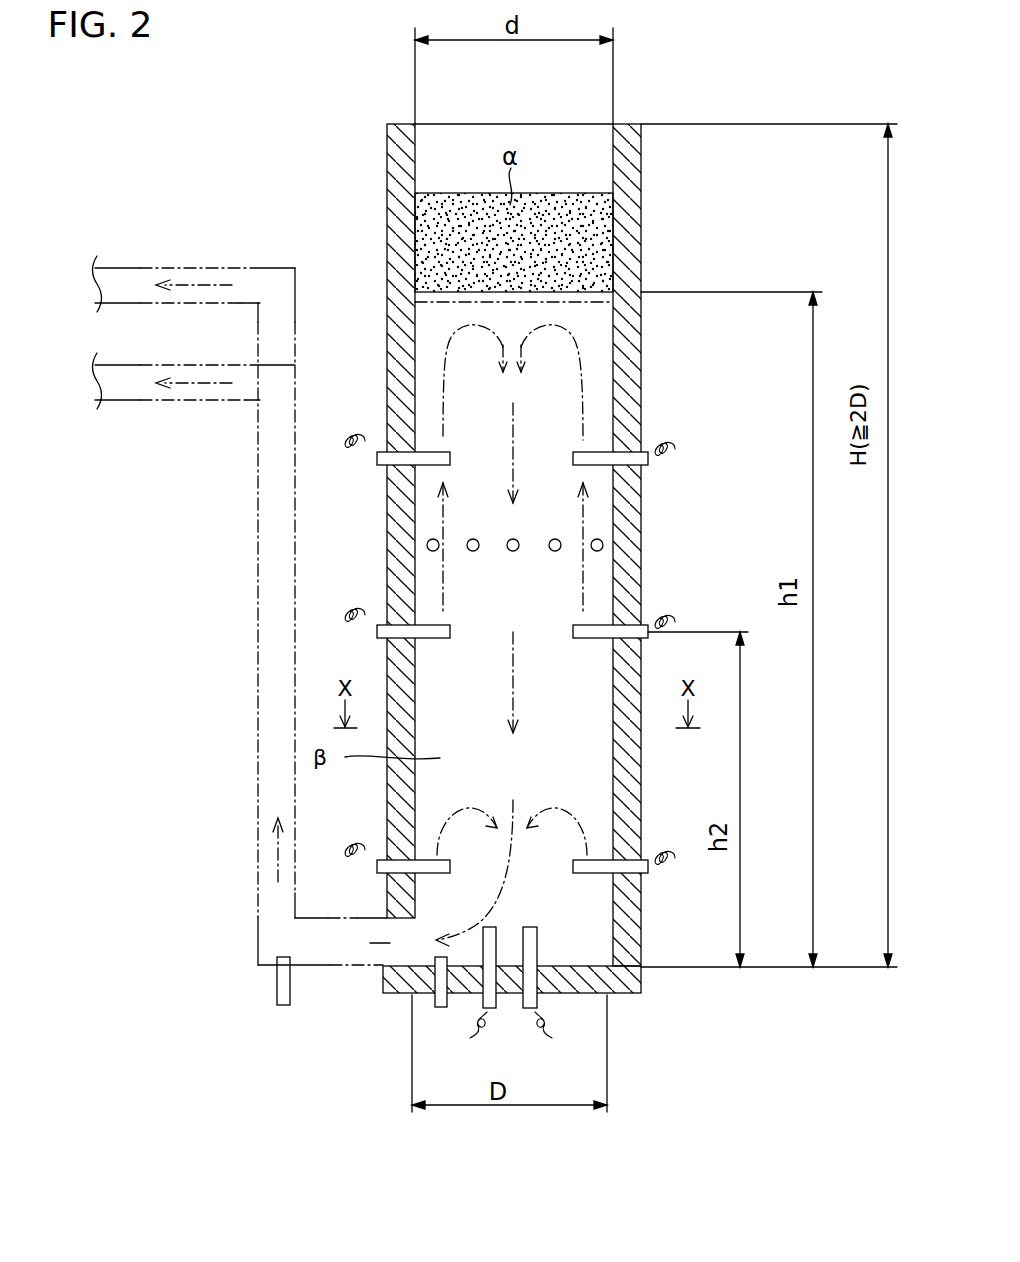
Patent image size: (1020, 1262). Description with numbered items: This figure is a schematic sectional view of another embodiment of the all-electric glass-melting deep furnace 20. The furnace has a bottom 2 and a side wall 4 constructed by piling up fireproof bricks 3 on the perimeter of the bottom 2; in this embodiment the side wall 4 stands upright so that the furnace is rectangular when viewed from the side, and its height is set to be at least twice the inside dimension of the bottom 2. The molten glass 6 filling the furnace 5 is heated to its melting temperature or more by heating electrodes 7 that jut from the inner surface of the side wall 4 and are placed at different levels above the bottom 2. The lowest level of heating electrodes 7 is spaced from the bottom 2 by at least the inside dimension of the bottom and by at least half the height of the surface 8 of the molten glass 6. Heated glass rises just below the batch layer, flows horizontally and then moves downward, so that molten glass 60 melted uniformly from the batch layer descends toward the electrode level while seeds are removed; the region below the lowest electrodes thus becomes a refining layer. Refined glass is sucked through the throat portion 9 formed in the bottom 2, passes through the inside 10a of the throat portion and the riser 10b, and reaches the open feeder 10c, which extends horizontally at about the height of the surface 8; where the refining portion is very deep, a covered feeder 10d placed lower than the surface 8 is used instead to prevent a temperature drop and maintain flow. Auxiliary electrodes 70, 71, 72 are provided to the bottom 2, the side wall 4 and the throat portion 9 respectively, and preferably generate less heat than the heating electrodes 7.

The all-electric glass-melting deep furnace 20 is at (474, 553).
The bottom 2 is at (560, 958).
The fireproof bricks 3 is at (631, 210).
The side wall 4 is at (380, 249).
The furnace 5 is at (634, 776).
The molten glass 6 is at (425, 387).
The heating electrodes 7 is at (385, 465).
The surface of the molten glass 8 is at (420, 292).
The throat portion 9 is at (370, 943).
The inside of the throat portion 10a is at (330, 940).
The riser 10b is at (266, 722).
The open feeder 10c is at (197, 268).
The covered feeder 10d is at (177, 402).
The molten glass 60 is at (641, 312).
The auxiliary electrode 70 is at (530, 1012).
The auxiliary electrode 71 is at (380, 858).
The auxiliary electrode 72 is at (283, 1008).